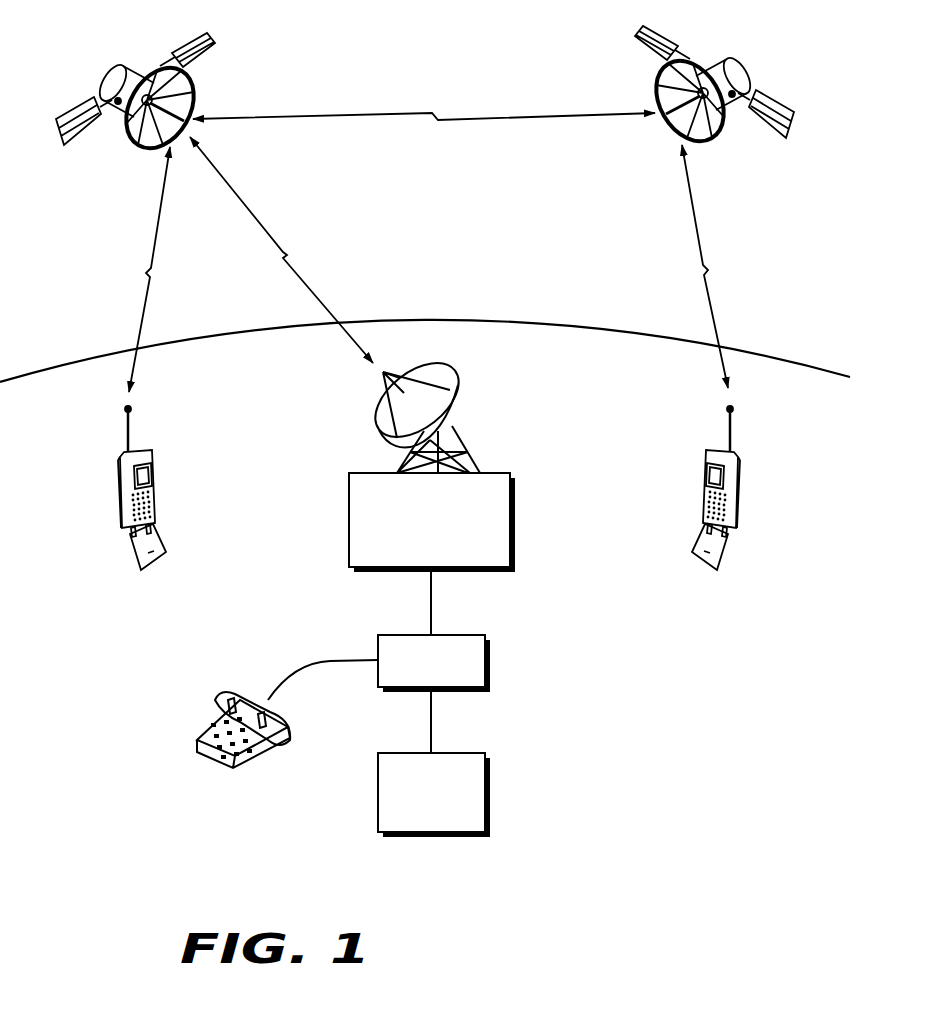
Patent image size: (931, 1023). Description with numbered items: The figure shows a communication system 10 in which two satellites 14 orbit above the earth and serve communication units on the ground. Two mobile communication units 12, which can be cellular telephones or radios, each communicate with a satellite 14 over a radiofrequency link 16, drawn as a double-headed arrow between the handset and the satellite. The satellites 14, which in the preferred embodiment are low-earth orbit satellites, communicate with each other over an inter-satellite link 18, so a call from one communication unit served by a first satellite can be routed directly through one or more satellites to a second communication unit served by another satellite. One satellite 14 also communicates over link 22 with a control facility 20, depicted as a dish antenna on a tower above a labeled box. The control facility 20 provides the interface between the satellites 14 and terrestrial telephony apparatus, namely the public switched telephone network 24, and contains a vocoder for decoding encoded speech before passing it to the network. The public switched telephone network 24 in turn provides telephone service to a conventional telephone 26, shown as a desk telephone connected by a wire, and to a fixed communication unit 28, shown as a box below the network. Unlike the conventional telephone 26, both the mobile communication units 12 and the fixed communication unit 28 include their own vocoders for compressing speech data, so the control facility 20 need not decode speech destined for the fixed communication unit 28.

The communication system 10 is at (700, 845).
The mobile communication unit 12 is at (120, 505).
The satellite 14 is at (127, 68).
The radiofrequency link 16 is at (157, 242).
The inter-satellite link 18 is at (486, 117).
The control facility 20 is at (516, 513).
The satellite-to-control-facility link 22 is at (313, 289).
The public switched telephone network 24 is at (490, 661).
The conventional telephone 26 is at (236, 692).
The fixed communication unit 28 is at (490, 790).